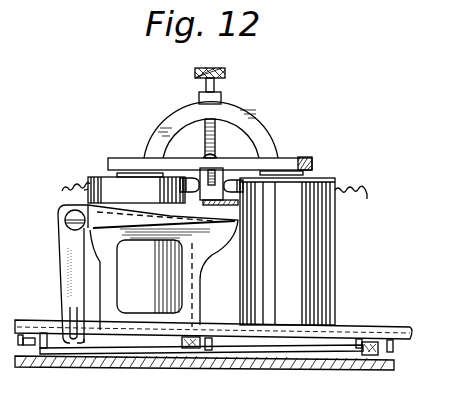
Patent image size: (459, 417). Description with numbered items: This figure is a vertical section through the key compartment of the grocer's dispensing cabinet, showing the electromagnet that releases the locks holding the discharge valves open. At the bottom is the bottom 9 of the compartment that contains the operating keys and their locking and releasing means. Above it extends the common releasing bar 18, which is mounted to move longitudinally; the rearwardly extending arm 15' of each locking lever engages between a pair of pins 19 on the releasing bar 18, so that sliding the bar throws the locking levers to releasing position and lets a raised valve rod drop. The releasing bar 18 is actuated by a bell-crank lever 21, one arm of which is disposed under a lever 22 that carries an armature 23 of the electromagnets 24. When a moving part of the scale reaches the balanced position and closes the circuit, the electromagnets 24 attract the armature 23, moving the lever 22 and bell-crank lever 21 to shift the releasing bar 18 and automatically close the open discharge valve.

The bottom 9 is at (327, 370).
The rearwardly extending arm 15' is at (286, 367).
The releasing bar 18 is at (391, 328).
The pins 19 is at (357, 342).
The bell-crank lever 21 is at (63, 267).
The lever 22 is at (226, 167).
The armature 23 is at (128, 158).
The electromagnets 24 is at (326, 234).